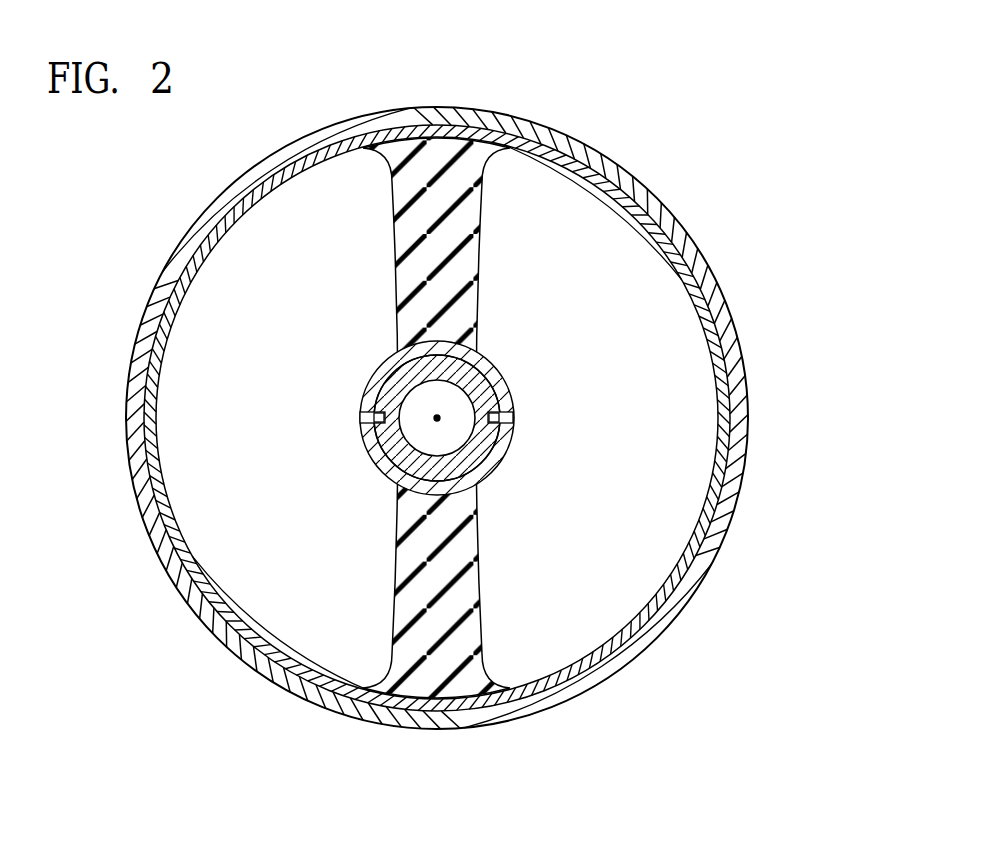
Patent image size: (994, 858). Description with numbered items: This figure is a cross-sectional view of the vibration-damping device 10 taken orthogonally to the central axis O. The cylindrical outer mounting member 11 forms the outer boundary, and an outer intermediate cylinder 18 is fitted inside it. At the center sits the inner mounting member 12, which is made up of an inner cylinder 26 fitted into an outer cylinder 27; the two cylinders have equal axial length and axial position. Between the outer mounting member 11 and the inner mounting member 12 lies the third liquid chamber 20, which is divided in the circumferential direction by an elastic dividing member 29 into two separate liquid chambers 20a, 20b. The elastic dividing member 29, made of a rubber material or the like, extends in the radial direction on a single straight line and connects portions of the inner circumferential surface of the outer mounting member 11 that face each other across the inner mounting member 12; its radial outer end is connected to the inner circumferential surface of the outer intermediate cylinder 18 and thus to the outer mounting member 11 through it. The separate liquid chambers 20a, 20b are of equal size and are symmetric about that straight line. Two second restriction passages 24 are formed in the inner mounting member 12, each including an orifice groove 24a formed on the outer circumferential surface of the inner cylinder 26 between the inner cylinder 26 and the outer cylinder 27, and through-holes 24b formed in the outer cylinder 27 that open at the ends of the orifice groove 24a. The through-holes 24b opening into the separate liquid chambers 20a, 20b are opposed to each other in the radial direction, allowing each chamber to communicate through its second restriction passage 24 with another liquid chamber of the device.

The vibration-damping device 10 is at (670, 115).
The outer mounting member 11 is at (750, 374).
The inner mounting member 12 is at (610, 454).
The outer intermediate cylinder 18 is at (727, 425).
The third liquid chamber 20 is at (364, 403).
The separate liquid chamber 20a is at (200, 433).
The separate liquid chamber 20b is at (574, 645).
The second restriction passage 24 is at (447, 467).
The orifice groove 24a is at (492, 413).
The through-hole 24b is at (513, 419).
The inner cylinder 26 is at (493, 444).
The outer cylinder 27 is at (503, 463).
The elastic dividing member 29 is at (492, 196).
The central axis O is at (437, 418).